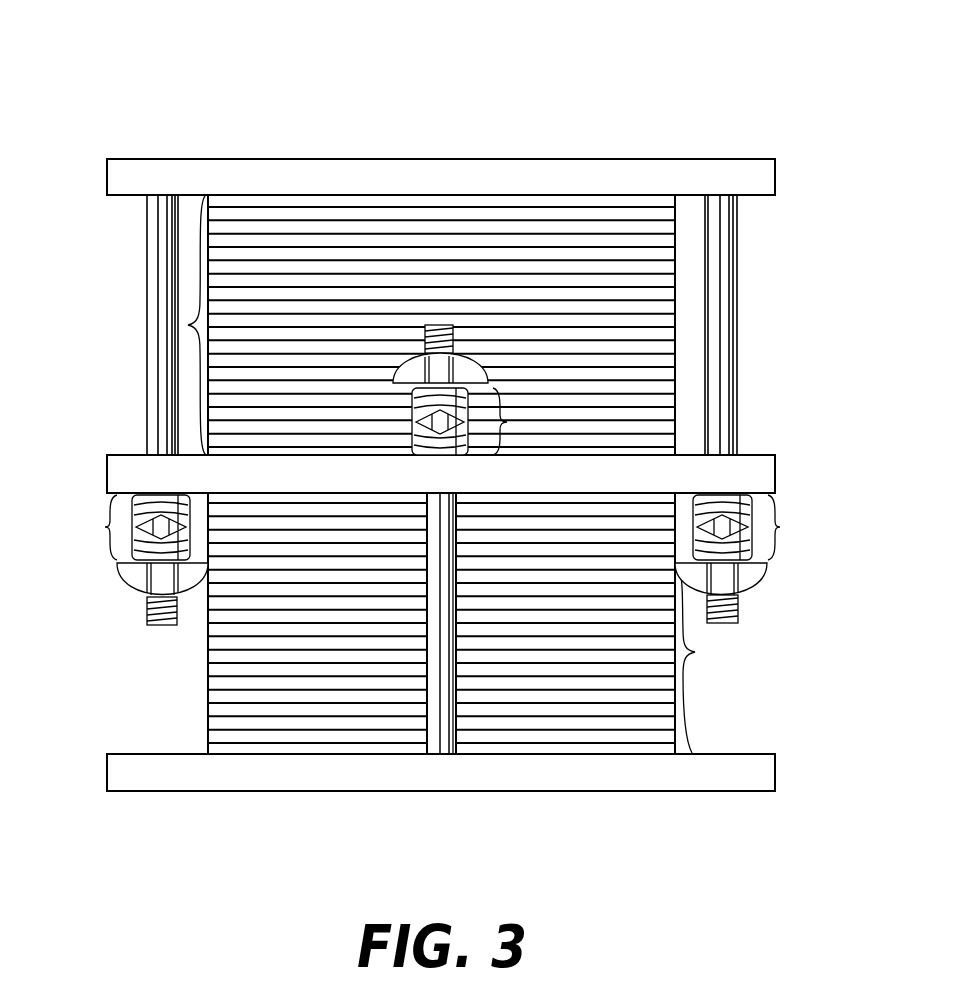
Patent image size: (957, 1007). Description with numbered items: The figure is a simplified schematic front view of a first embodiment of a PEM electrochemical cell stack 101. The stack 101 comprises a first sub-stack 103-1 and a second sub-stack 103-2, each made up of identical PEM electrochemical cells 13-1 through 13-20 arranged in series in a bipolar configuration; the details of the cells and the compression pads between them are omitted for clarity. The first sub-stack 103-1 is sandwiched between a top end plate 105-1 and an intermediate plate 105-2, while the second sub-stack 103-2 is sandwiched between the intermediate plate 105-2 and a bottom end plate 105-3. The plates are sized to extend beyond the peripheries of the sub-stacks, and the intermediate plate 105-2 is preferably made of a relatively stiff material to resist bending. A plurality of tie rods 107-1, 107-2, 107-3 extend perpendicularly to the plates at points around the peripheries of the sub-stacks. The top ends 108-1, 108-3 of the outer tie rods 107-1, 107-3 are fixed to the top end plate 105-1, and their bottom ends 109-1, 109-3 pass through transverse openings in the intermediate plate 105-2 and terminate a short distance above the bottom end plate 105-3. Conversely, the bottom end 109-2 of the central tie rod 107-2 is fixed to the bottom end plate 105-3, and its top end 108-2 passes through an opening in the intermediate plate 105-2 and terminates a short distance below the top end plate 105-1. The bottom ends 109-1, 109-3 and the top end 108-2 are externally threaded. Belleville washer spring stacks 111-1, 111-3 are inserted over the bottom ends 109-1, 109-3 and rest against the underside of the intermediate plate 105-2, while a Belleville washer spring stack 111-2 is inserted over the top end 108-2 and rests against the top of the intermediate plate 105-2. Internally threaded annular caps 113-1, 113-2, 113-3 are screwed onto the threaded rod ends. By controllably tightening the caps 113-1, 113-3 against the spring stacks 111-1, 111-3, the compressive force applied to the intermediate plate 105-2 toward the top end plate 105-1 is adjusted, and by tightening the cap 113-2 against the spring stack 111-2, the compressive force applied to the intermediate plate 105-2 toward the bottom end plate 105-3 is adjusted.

The PEM electrochemical cell stack 101 is at (172, 84).
The top end plate 105-1 is at (497, 175).
The intermediate plate 105-2 is at (128, 465).
The bottom end plate 105-3 is at (122, 770).
The PEM electrochemical cell 13-1 is at (646, 197).
The PEM electrochemical cell 13-20 is at (693, 440).
The tie rod 107-1 is at (152, 380).
The tie rod 107-2 is at (436, 700).
The tie rod 107-3 is at (727, 308).
The top end of tie rod 108-1 is at (147, 197).
The top end of tie rod 108-2 is at (437, 326).
The top end of tie rod 108-3 is at (741, 197).
The bottom end of tie rod 109-1 is at (145, 622).
The bottom end of tie rod 109-2 is at (460, 746).
The bottom end of tie rod 109-3 is at (740, 618).
The Belleville washer spring stack 111-1 is at (116, 527).
The Belleville washer spring stack 111-2 is at (510, 422).
The Belleville washer spring stack 111-3 is at (764, 527).
The annular cap 113-1 is at (127, 580).
The annular cap 113-2 is at (408, 372).
The annular cap 113-3 is at (758, 573).
The first sub-stack 103-1 is at (188, 325).
The second sub-stack 103-2 is at (721, 659).